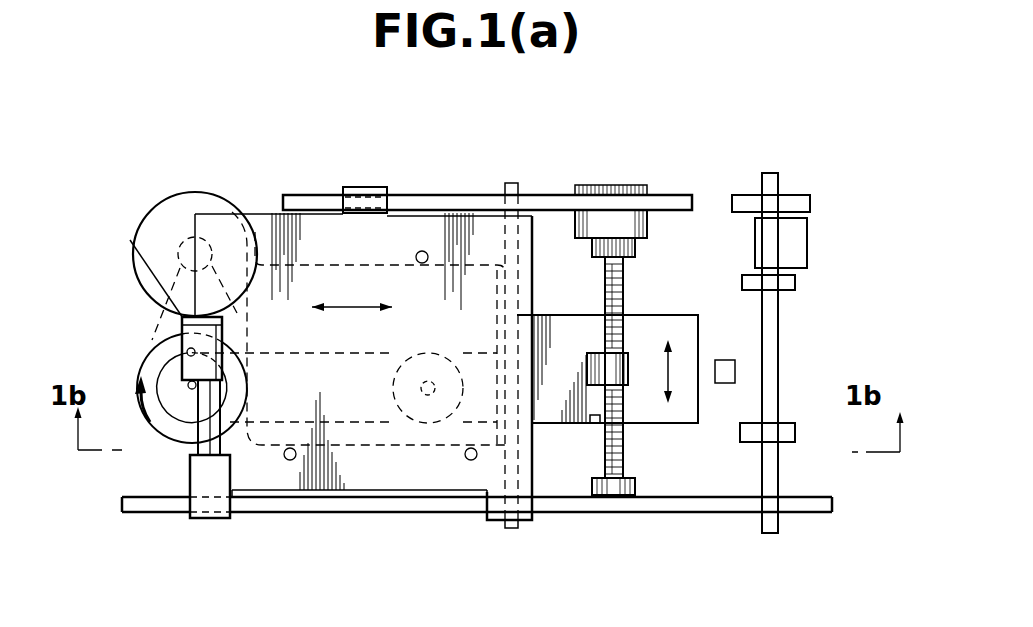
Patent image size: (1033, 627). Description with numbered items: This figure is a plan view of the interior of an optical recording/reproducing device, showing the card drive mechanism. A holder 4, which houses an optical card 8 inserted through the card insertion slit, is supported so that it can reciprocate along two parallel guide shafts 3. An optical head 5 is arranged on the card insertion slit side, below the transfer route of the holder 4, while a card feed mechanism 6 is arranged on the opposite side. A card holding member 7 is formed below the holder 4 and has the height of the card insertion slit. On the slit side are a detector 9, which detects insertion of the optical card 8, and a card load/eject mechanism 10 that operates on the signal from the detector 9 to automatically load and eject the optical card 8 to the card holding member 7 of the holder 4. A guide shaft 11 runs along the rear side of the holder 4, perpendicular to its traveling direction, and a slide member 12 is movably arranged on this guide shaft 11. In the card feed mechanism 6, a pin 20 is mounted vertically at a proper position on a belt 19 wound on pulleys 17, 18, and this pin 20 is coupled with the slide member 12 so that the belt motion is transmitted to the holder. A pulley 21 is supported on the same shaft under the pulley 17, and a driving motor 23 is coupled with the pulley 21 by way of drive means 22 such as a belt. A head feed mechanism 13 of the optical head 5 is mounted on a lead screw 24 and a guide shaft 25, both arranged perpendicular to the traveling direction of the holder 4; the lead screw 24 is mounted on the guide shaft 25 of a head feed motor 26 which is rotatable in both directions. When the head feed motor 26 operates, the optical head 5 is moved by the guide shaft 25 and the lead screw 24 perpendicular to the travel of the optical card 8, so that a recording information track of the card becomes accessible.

The guide shafts 3 is at (430, 195).
The holder 4 is at (255, 262).
The optical head 5 is at (557, 315).
The card feed mechanism 6 is at (122, 190).
The card holding member 7 is at (426, 252).
The optical card 8 is at (278, 212).
The detector 9 is at (728, 360).
The card load/eject mechanism 10 is at (795, 185).
The guide shaft 11 is at (190, 432).
The slide member 12 is at (182, 322).
The head feed mechanism 13 is at (640, 458).
The pulley 17 is at (160, 375).
The pulley 18 is at (440, 424).
The belt 19 is at (373, 426).
The pin 20 is at (183, 348).
The pulley 21 is at (145, 420).
The drive means 22 is at (130, 240).
The driving motor 23 is at (172, 193).
The lead screw 24 is at (625, 285).
The guide shaft 25 is at (522, 487).
The head feed motor 26 is at (612, 185).